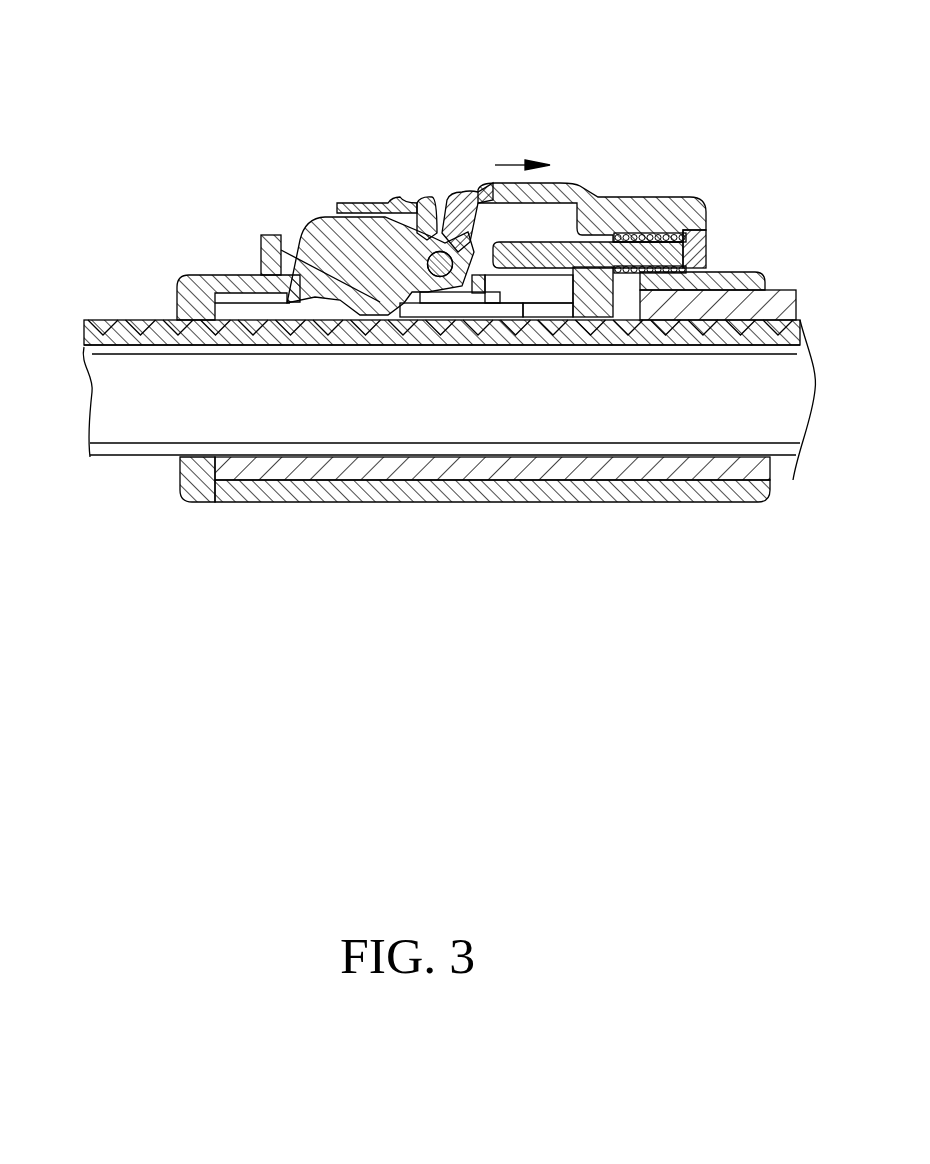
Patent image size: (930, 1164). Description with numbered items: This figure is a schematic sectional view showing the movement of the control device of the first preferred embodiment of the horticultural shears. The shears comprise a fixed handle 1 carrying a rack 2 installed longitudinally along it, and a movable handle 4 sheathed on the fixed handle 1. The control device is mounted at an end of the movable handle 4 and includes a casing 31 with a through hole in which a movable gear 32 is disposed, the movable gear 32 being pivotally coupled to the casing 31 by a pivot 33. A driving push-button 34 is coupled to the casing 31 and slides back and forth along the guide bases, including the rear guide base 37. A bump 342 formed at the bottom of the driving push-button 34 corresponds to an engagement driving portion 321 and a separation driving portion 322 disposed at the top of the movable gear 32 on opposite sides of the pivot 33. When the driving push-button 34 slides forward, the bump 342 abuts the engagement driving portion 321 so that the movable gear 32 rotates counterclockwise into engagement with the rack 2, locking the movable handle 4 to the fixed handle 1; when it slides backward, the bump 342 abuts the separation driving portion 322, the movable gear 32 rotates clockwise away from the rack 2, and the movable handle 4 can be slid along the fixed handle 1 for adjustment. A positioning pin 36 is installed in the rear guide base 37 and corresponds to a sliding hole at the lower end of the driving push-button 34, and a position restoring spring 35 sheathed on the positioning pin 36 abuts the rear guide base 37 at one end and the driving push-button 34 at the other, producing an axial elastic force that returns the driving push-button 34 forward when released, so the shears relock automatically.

The fixed handle 1 is at (92, 433).
The rack 2 is at (125, 322).
The movable handle 4 is at (777, 465).
The casing 31 is at (197, 283).
The movable gear 32 is at (263, 237).
The engagement driving portion 321 is at (343, 235).
The separation driving portion 322 is at (465, 233).
The pivot 33 is at (439, 252).
The driving push-button 34 is at (353, 212).
The bump 342 is at (415, 208).
The position restoring spring 35 is at (632, 237).
The positioning pin 36 is at (562, 242).
The rear guide base 37 is at (700, 257).